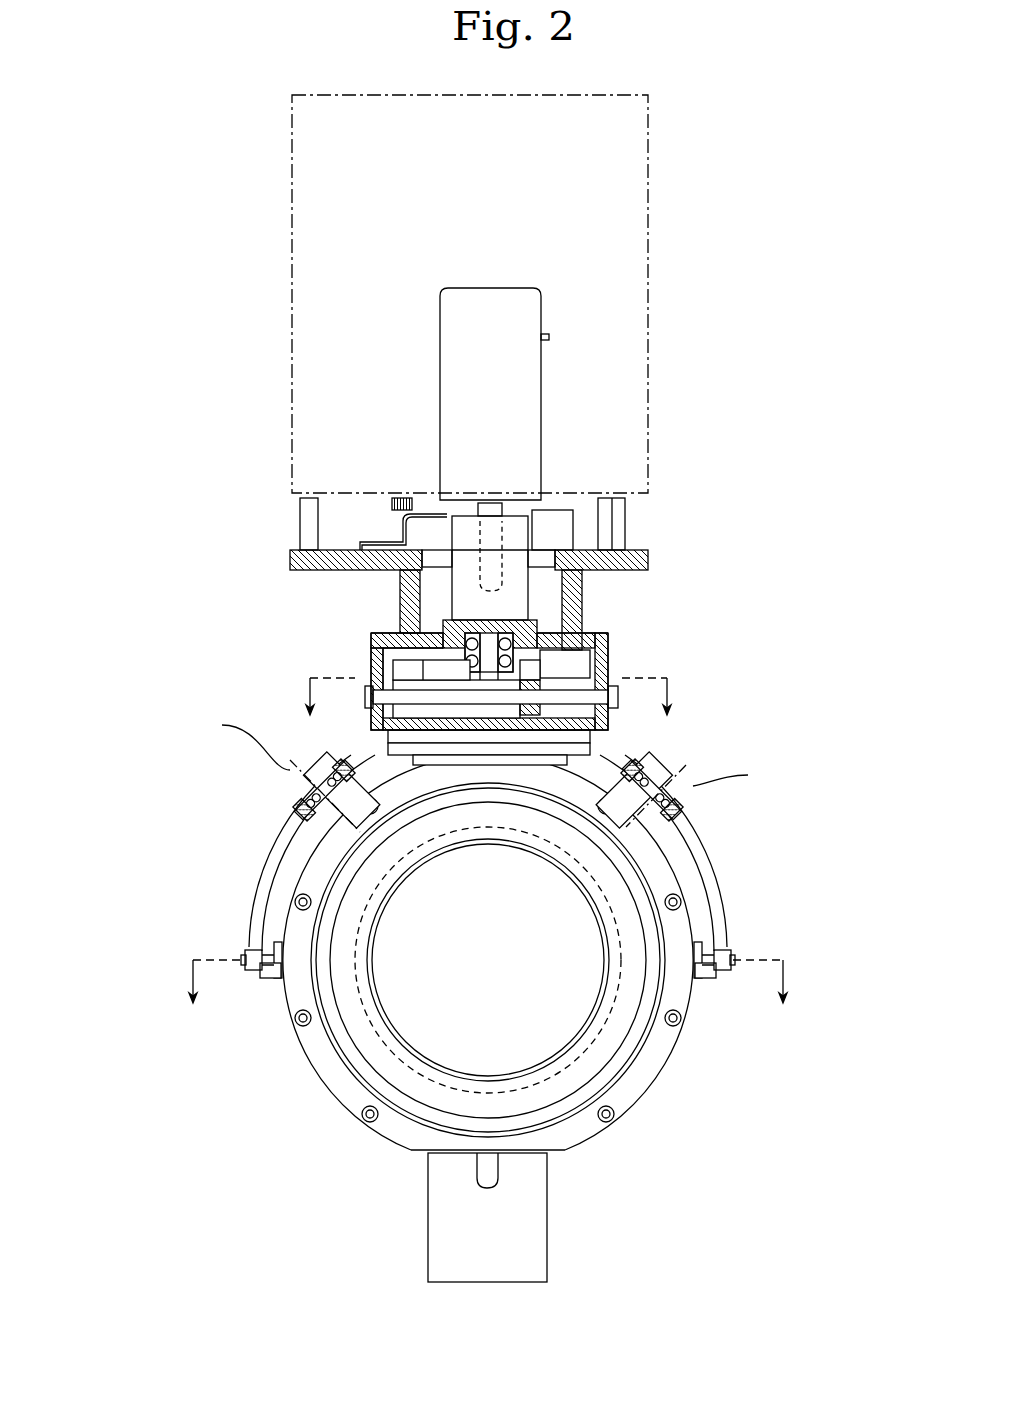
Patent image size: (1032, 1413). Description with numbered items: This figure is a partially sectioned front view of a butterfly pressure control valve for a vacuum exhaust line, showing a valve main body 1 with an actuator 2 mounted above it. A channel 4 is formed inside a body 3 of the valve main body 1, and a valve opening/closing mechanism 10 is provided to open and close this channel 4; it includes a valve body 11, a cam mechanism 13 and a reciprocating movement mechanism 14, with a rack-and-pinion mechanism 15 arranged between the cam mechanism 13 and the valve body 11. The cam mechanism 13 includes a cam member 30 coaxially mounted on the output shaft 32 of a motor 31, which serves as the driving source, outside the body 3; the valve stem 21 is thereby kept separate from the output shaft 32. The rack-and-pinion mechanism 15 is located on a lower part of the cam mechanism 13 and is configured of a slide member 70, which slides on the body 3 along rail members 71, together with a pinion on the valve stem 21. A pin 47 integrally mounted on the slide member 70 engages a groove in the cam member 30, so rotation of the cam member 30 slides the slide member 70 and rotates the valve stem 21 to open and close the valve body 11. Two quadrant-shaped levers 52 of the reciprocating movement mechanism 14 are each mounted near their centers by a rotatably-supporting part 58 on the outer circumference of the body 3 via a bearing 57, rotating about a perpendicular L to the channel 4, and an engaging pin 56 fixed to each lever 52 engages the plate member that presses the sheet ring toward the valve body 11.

The valve main body 1 is at (501, 997).
The actuator 2 is at (467, 357).
The body 3 is at (322, 1058).
The channel 4 is at (540, 1062).
The valve opening/closing mechanism 10 is at (609, 650).
The valve body 11 is at (435, 1045).
The cam mechanism 13 is at (446, 637).
The reciprocating movement mechanism 14 is at (703, 860).
The rack-and-pinion mechanism 15 is at (590, 752).
The valve stem 21 is at (395, 640).
The cam member 30 is at (502, 661).
The motor 31 is at (523, 408).
The output shaft 32 is at (492, 546).
The pin 47 is at (583, 697).
The lever 52 is at (282, 880).
The engaging pin 56 is at (270, 975).
The bearing 57 is at (292, 808).
The rotatably-supporting part 58 is at (300, 790).
The slide member 70 is at (412, 708).
The rail member 71 is at (543, 709).